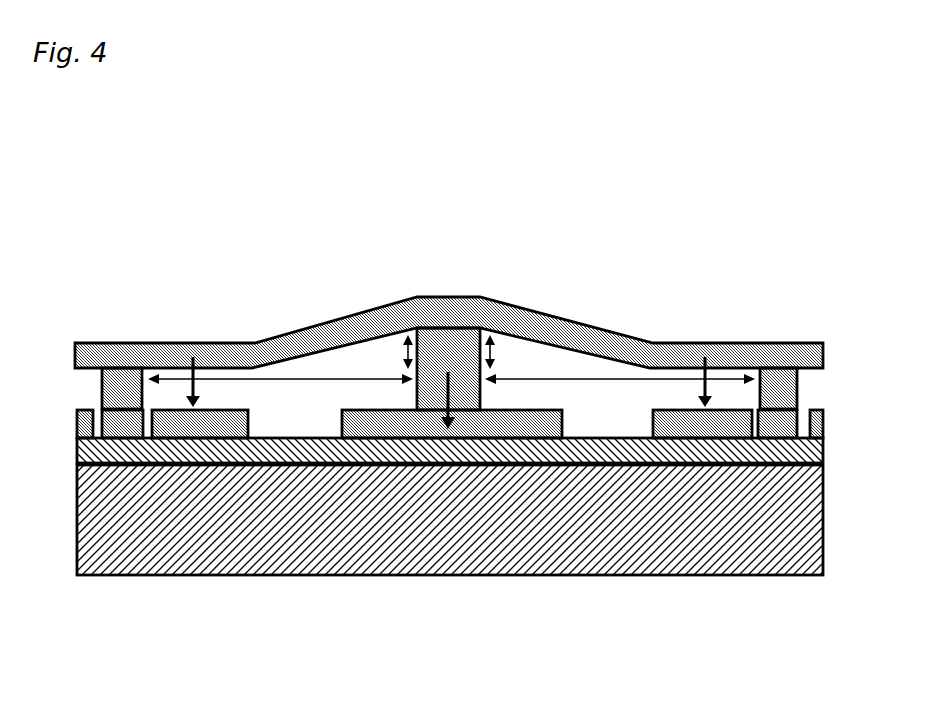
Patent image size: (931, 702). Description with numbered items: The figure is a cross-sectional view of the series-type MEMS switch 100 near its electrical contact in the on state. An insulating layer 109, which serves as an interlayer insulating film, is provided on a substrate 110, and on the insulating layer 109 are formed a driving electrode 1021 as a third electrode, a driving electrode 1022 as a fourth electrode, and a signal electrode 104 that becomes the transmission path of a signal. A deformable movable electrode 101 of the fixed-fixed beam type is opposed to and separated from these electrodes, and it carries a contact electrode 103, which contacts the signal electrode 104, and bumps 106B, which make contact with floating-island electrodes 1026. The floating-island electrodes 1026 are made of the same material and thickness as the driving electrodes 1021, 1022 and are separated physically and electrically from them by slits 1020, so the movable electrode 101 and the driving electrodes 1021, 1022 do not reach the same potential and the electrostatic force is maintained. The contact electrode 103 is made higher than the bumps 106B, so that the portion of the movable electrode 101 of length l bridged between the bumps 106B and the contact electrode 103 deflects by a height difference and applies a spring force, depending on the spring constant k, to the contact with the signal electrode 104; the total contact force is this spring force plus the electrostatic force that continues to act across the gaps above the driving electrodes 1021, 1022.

The MEMS switch 100 is at (242, 131).
The movable electrode 101 is at (385, 318).
The contact electrode 103 is at (448, 352).
The signal electrode 104 is at (477, 427).
The bump 106B is at (122, 390).
The insulating layer 109 is at (99, 440).
The substrate 110 is at (770, 522).
The slit 1020 is at (803, 427).
The driving electrode 1021 is at (213, 423).
The driving electrode 1022 is at (702, 427).
The floating-island electrode 1026 is at (122, 423).